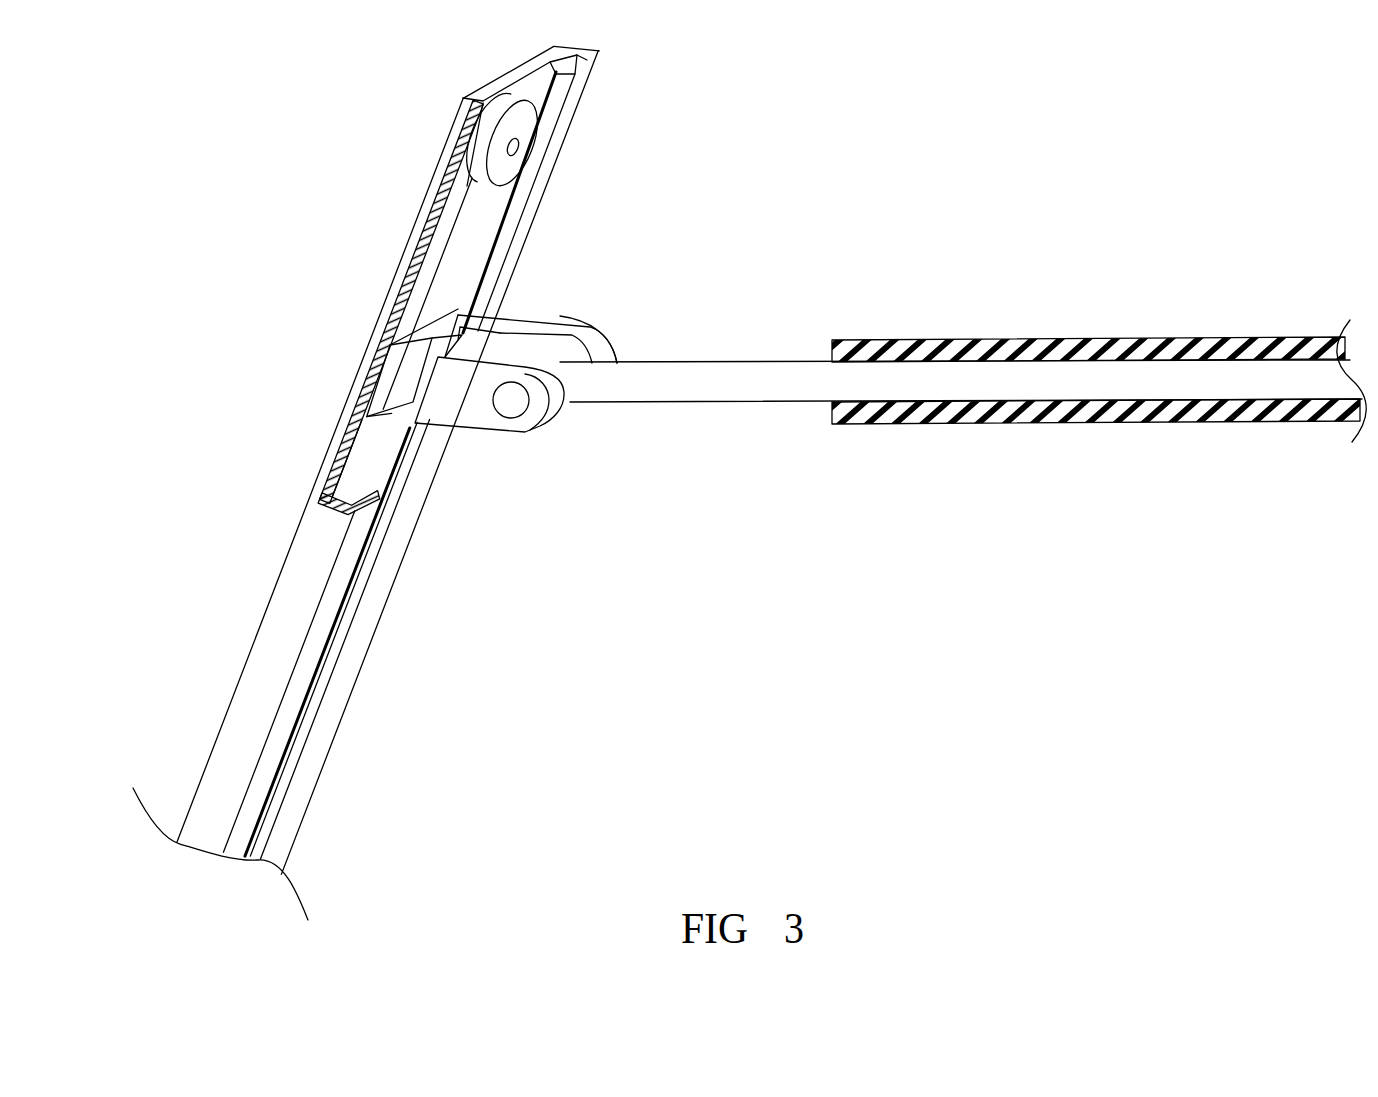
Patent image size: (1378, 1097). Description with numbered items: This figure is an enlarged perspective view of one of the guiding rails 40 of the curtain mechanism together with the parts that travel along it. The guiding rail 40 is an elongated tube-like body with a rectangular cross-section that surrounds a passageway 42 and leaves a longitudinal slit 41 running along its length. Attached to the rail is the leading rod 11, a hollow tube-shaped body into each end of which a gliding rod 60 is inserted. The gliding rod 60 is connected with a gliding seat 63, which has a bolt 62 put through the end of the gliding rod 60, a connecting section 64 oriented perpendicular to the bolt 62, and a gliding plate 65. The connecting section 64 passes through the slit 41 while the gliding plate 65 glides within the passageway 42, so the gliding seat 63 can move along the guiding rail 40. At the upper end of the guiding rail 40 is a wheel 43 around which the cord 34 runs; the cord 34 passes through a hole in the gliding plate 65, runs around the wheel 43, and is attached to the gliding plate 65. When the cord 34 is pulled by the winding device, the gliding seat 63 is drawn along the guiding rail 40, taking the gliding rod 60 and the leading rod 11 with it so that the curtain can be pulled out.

The leading rod 11 is at (957, 356).
The cord 34 is at (430, 286).
The guiding rail 40 is at (232, 655).
The longitudinal slit 41 is at (337, 648).
The passageway 42 is at (361, 473).
The wheel 43 is at (502, 177).
The gliding rod 60 is at (760, 350).
The bolt 62 is at (512, 402).
The gliding seat 63 is at (587, 330).
The connecting section 64 is at (458, 316).
The gliding plate 65 is at (383, 397).